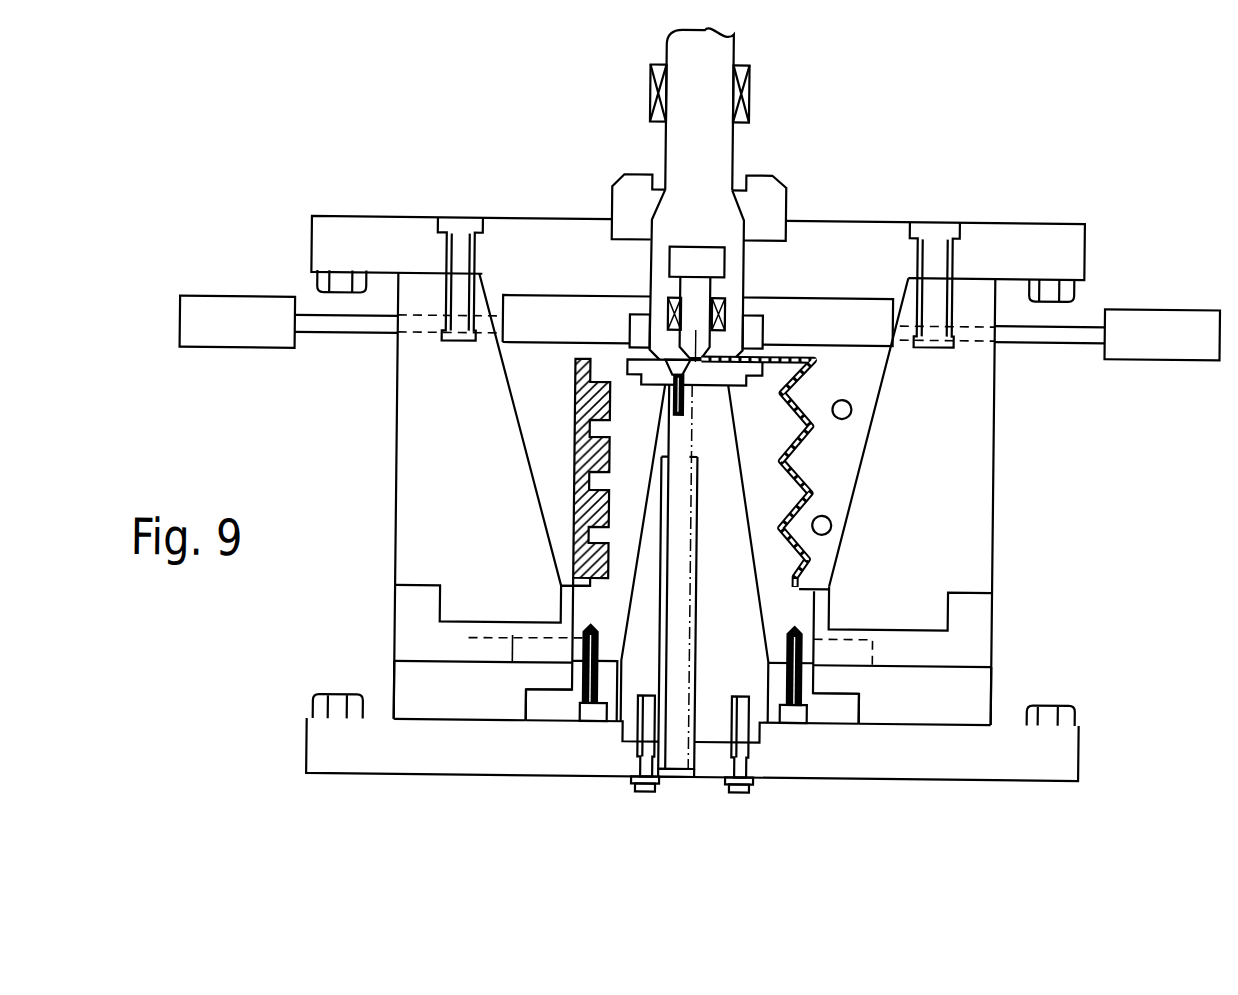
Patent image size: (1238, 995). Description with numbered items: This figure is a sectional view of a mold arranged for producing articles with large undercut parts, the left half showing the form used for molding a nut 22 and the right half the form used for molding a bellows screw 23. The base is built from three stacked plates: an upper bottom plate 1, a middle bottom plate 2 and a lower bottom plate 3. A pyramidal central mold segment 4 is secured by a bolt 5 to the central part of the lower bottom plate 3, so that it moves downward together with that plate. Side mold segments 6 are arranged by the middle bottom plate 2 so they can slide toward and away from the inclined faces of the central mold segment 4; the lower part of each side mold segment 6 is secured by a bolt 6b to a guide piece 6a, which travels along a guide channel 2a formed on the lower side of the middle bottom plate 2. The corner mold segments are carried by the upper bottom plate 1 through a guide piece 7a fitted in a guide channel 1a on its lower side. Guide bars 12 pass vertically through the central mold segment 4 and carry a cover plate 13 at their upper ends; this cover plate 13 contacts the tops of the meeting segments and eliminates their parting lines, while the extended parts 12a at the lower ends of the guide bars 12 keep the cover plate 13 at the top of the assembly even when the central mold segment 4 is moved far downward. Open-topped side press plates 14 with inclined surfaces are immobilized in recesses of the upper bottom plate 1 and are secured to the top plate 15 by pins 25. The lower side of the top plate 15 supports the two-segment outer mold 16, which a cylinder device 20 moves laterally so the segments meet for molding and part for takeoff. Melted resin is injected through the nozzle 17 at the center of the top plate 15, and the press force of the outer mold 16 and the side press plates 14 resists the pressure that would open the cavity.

The upper bottom plate 1 is at (976, 651).
The guide channel / fitting recess 1a is at (470, 640).
The middle bottom plate 2 is at (976, 694).
The guide channel 2a is at (521, 714).
The lower bottom plate 3 is at (991, 762).
The central mold segment 4 is at (720, 720).
The bolt 5 is at (745, 792).
The side mold segment 6 is at (622, 484).
The guide piece 6a is at (553, 710).
The bolt 6b is at (597, 716).
The guide piece 7a is at (533, 655).
The guide bar 12 is at (677, 571).
The extended part 12a is at (673, 777).
The cover plate 13 is at (937, 541).
The side press plate 14 is at (425, 423).
The top plate 15 is at (867, 260).
The outer mold 16 is at (525, 380).
The nozzle 17 is at (653, 277).
The cylinder device 20 is at (1145, 305).
The nut 22 is at (584, 361).
The bellows screw 23 is at (810, 357).
The pin 25 is at (934, 238).